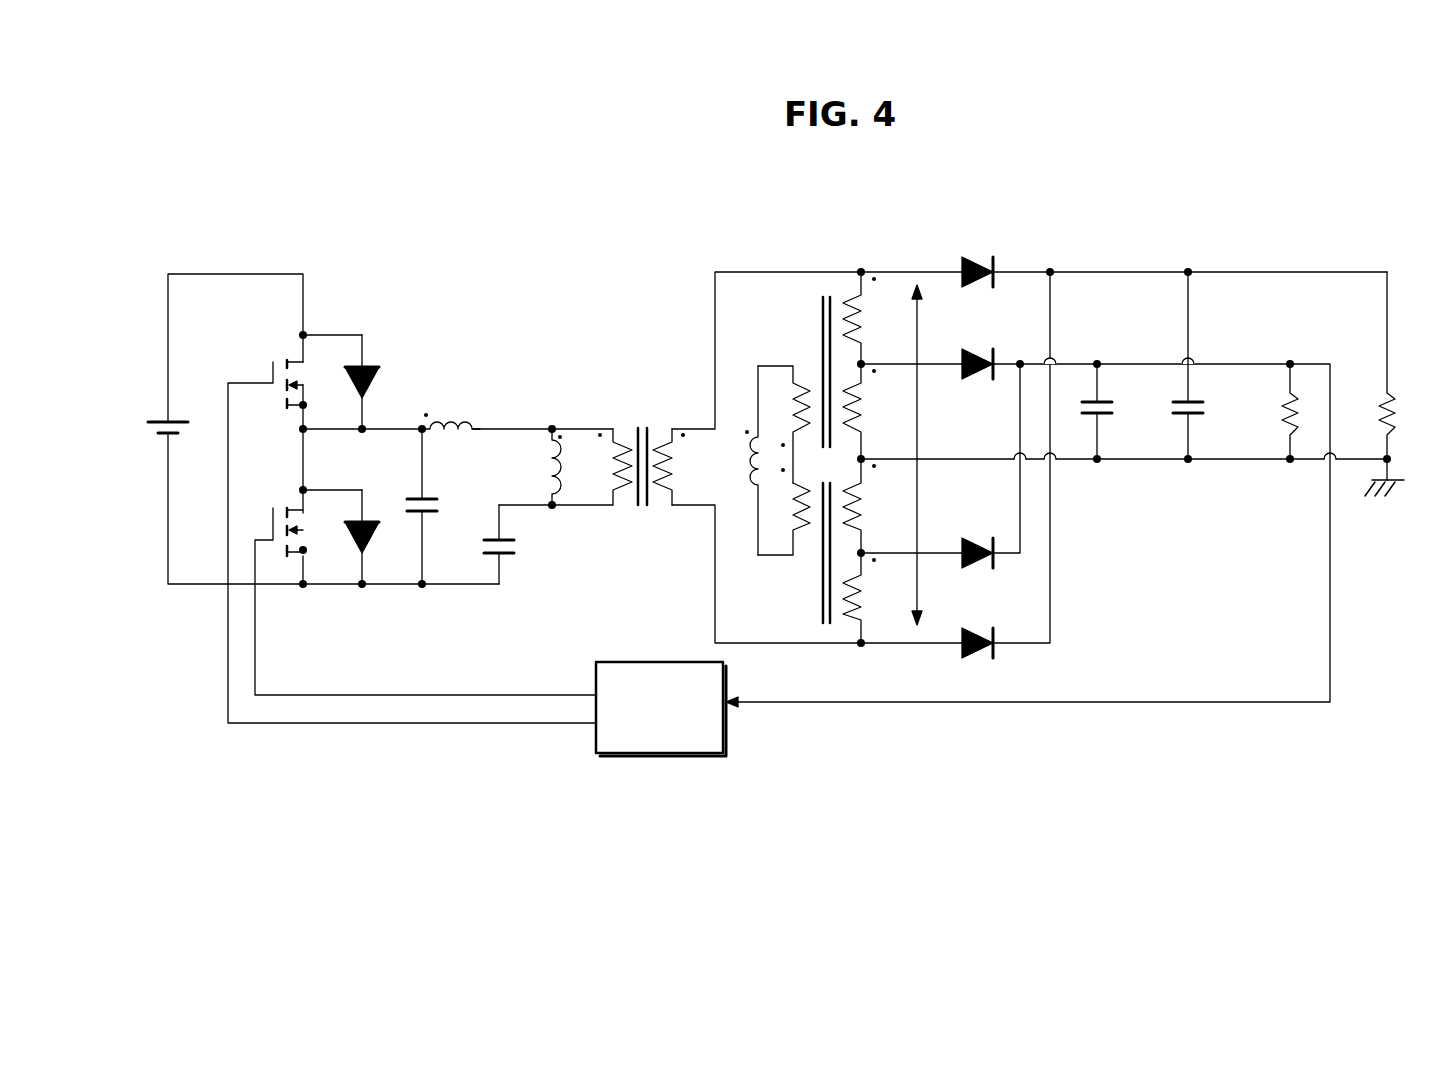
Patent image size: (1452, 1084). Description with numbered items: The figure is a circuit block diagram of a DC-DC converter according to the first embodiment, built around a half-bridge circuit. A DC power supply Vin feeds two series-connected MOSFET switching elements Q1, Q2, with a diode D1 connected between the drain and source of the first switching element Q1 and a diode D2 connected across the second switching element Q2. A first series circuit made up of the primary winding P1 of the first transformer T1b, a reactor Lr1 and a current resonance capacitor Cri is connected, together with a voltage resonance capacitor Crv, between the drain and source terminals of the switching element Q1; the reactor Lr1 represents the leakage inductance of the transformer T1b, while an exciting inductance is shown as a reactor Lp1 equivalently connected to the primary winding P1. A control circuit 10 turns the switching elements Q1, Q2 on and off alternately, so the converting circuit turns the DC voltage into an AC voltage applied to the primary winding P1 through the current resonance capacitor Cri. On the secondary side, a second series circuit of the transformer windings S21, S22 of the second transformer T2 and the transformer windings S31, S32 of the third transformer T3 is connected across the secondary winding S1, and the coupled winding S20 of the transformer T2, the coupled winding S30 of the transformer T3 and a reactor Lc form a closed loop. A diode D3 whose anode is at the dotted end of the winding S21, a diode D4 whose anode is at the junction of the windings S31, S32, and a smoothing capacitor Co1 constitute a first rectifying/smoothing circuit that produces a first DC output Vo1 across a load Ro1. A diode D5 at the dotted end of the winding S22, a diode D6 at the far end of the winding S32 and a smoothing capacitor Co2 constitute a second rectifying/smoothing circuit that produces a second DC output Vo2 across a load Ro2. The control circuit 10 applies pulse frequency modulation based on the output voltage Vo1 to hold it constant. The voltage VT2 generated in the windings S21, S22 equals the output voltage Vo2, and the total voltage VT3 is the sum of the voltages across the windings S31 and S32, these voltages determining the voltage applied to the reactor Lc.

The DC power supply Vin is at (178, 414).
The first switching element Q1 is at (425, 601).
The second switching element Q2 is at (412, 541).
The diode D1 is at (357, 537).
The diode D2 is at (372, 382).
The first reactor Lr1 is at (451, 407).
The voltage resonance capacitor Crv is at (436, 506).
The current resonance capacitor Cri is at (511, 544).
The reactor Lp1 is at (536, 467).
The primary winding P1 is at (592, 467).
The secondary winding S1 is at (680, 467).
The first transformer T1b is at (641, 453).
The second transformer T2 is at (812, 370).
The third transformer T3 is at (812, 555).
The coupled winding S20 is at (786, 413).
The transformer winding S21 is at (877, 411).
The transformer winding S22 is at (877, 318).
The coupled winding S30 is at (786, 532).
The transformer winding S31 is at (877, 506).
The transformer winding S32 is at (877, 598).
The reactor Lc is at (744, 460).
The diode D3 is at (980, 375).
The diode D4 is at (980, 541).
The diode D5 is at (980, 284).
The diode D6 is at (980, 632).
The voltage VT2 is at (943, 372).
The total voltage VT3 is at (943, 542).
The smoothing capacitor Co1 is at (1110, 411).
The smoothing capacitor Co2 is at (1201, 365).
The load Ro1 is at (1270, 411).
The load Ro2 is at (1402, 384).
The first DC output Vo1 is at (1098, 364).
The second DC output Vo2 is at (1190, 272).
The control circuit 10 is at (723, 735).